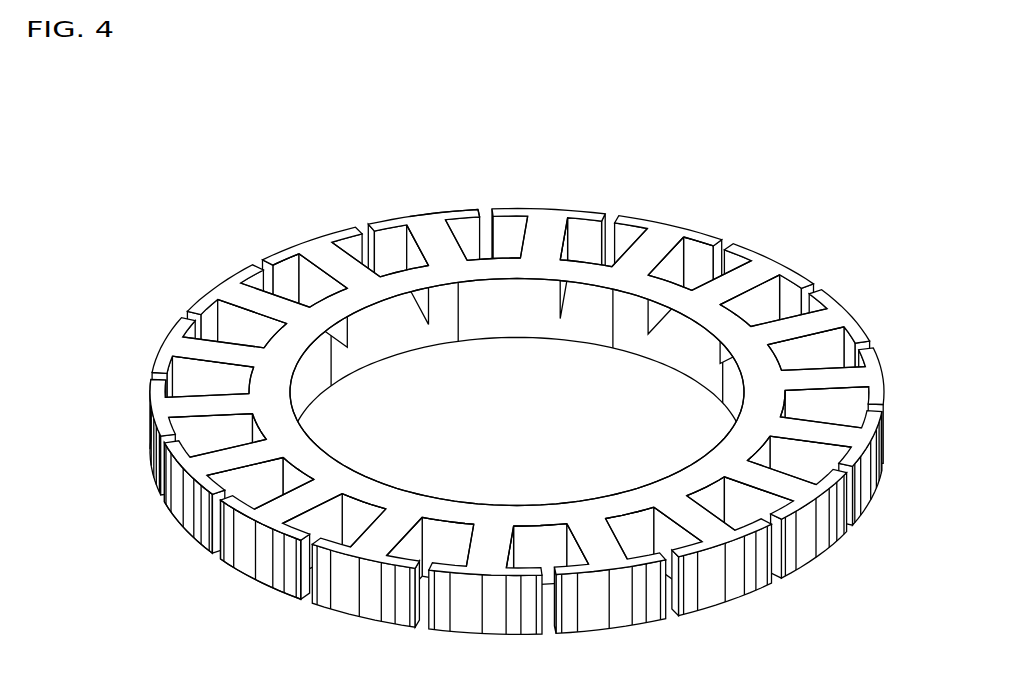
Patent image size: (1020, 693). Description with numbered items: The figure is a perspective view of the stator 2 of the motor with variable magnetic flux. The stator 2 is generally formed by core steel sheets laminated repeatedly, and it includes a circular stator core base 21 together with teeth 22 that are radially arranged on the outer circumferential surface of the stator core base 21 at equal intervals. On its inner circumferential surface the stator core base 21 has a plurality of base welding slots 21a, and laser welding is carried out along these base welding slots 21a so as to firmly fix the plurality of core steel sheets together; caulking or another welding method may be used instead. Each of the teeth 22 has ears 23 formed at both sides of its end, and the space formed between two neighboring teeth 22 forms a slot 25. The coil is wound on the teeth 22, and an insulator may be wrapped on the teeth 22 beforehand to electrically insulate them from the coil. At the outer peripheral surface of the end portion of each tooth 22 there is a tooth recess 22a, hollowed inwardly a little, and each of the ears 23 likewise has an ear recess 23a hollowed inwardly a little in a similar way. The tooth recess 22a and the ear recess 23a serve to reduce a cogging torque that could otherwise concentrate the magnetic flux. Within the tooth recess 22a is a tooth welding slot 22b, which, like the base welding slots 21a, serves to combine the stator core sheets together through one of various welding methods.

The stator 2 is at (314, 168).
The stator core base 21 is at (590, 280).
The base welding slots 21a is at (462, 318).
The teeth 22 is at (622, 255).
The tooth recess 22a is at (445, 210).
The tooth welding slot 22b is at (424, 216).
The ears 23 is at (613, 240).
The ear recess 23a is at (468, 211).
The slot 25 is at (292, 268).